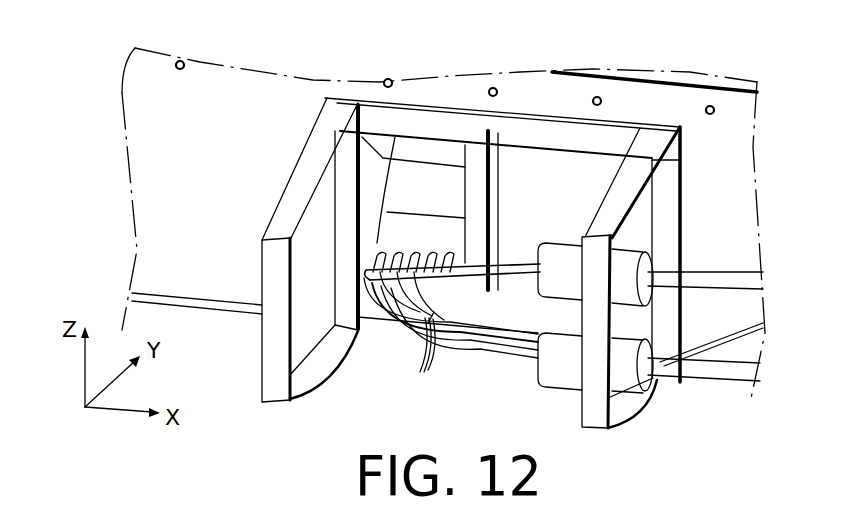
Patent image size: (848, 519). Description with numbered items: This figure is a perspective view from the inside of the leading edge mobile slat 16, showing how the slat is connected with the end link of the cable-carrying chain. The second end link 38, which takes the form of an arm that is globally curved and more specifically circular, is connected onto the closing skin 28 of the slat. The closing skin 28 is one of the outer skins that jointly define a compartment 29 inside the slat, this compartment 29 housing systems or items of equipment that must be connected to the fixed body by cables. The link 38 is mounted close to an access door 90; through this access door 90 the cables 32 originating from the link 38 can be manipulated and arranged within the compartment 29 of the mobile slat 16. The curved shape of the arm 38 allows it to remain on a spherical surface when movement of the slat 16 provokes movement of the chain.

The mobile slat 16 is at (126, 158).
The closing skin 28 is at (168, 243).
The compartment 29 is at (209, 357).
The cables 32 is at (420, 373).
The second end link 38 is at (420, 185).
The access door 90 is at (538, 175).